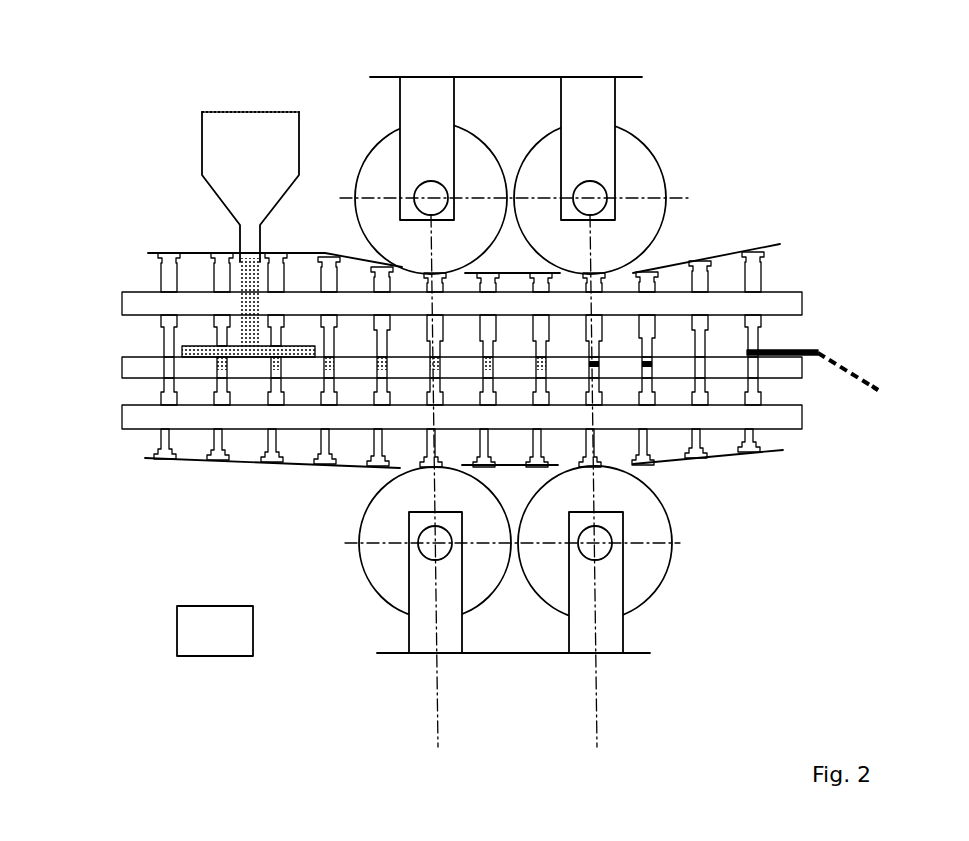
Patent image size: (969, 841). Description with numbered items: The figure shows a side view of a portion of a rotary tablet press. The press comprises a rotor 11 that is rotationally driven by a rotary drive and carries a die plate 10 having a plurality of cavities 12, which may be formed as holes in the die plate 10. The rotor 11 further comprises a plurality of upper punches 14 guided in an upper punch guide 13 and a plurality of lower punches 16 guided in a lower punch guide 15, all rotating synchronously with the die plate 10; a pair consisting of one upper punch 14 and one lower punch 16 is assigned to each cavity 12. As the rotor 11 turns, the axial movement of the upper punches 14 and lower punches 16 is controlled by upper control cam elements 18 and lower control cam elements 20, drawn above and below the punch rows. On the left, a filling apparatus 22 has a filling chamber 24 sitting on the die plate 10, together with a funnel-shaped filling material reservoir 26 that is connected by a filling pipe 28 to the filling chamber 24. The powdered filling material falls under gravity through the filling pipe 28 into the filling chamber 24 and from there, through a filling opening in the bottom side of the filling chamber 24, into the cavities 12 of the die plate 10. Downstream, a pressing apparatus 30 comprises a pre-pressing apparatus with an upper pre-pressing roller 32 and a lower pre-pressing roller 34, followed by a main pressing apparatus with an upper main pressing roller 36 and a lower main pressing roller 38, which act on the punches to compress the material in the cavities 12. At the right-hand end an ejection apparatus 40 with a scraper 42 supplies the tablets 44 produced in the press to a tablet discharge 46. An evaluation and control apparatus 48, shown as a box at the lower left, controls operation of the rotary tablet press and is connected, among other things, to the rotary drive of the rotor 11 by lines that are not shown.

The die plate 10 is at (130, 367).
The rotor 11 is at (790, 146).
The cavities 12 is at (168, 360).
The upper punch guide 13 is at (130, 302).
The upper punches 14 is at (165, 282).
The lower punch guide 15 is at (138, 416).
The lower punches 16 is at (165, 438).
The upper control cam elements 18 is at (190, 250).
The lower control cam elements 20 is at (185, 458).
The filling apparatus 22 is at (195, 118).
The filling chamber 24 is at (185, 352).
The filling material reservoir 26 is at (240, 128).
The filling pipe 28 is at (256, 240).
The pressing apparatus 30 is at (660, 94).
The upper pre-pressing roller 32 is at (381, 150).
The lower pre-pressing roller 34 is at (383, 572).
The upper main pressing roller 36 is at (653, 183).
The lower main pressing roller 38 is at (655, 560).
The ejection apparatus 40 is at (832, 325).
The scraper 42 is at (812, 352).
The tablets 44 is at (850, 372).
The tablet discharge 46 is at (872, 392).
The evaluation and control apparatus 48 is at (222, 638).